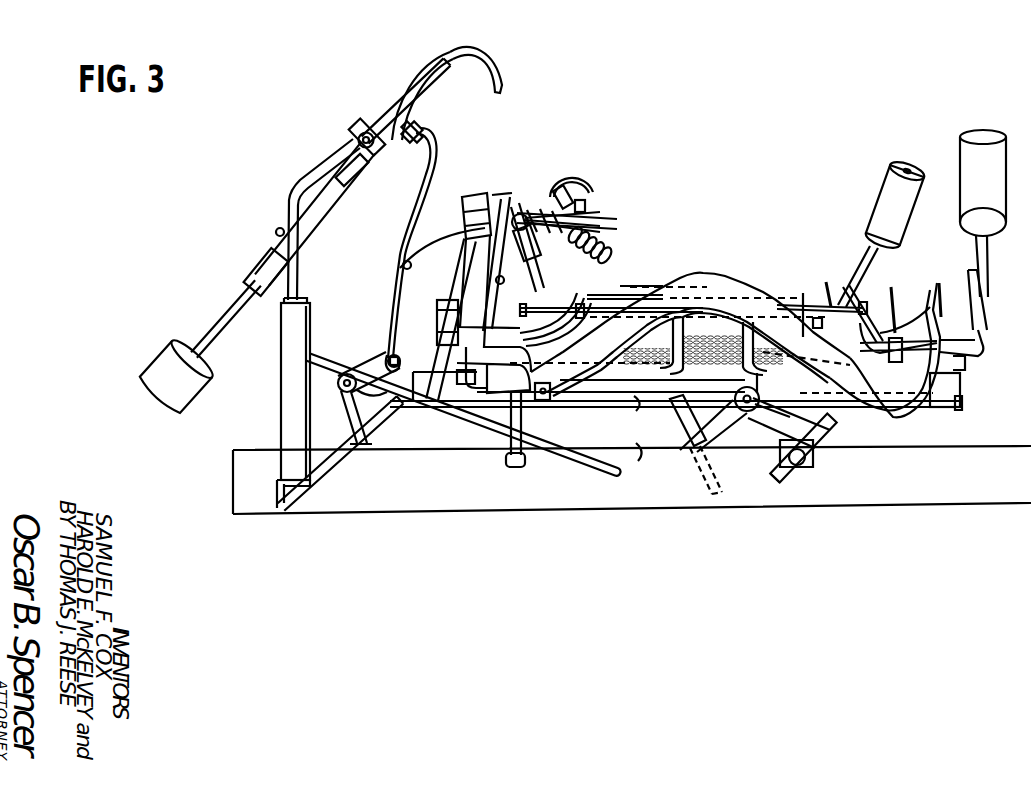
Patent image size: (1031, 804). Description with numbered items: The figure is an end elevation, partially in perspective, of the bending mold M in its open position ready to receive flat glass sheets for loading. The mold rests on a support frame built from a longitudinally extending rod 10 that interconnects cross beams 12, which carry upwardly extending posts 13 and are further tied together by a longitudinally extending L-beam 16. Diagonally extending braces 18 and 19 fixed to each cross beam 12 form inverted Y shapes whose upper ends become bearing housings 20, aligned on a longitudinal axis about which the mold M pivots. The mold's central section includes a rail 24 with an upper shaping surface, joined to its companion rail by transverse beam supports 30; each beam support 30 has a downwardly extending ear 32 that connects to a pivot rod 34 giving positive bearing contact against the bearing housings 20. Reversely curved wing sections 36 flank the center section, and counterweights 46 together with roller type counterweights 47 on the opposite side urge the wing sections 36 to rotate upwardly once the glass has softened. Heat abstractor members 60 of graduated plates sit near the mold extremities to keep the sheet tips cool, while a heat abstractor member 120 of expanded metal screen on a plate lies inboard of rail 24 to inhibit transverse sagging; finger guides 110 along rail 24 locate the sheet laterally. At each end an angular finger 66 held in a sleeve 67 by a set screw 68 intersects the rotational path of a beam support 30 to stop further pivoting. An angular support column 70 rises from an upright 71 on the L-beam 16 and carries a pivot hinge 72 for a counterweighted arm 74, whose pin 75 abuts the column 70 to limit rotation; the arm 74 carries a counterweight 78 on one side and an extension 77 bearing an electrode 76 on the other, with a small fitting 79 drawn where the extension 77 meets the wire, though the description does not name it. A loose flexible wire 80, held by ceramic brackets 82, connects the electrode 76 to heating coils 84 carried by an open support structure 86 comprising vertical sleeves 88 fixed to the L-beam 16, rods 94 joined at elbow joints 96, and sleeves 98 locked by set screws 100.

The longitudinally extending rod 10 is at (690, 430).
The cross beams 12 is at (632, 447).
The upwardly extending posts 13 is at (522, 418).
The longitudinally extending L-beam 16 is at (336, 452).
The diagonally extending brace 18 is at (727, 432).
The diagonally extending brace 19 is at (768, 433).
The bearing housings 20 is at (741, 392).
The rail 24 is at (866, 322).
The beam supports 30 is at (653, 336).
The downwardly extending ear 32 is at (760, 380).
The pivot rod 34 is at (760, 403).
The wing sections 36 is at (803, 310).
The counterweights 46 is at (922, 250).
The roller type counterweights 47 is at (483, 200).
The heat abstractor members 60 is at (610, 295).
The angular finger 66 is at (832, 435).
The sleeve 67 is at (810, 460).
The set screw 68 is at (800, 470).
The angular support column 70 is at (308, 175).
The upright 71 is at (309, 300).
The pivot hinge 72 is at (358, 133).
The counterweighted arm 74 is at (228, 307).
The pin 75 is at (276, 232).
The electrode 76 is at (492, 68).
The extension 77 is at (383, 146).
The counterweight 78 is at (177, 376).
The clamp 79 is at (418, 128).
The flexible wire 80 is at (424, 166).
The ceramic brackets 82 is at (347, 373).
The heating coils 84 is at (612, 245).
The open support structure 86 is at (602, 218).
The vertical sleeves 88 is at (452, 360).
The rods 94 is at (522, 206).
The elbow joints 96 is at (506, 198).
The sleeves 98 is at (588, 208).
The set screws 100 is at (570, 200).
The finger guides 110 is at (828, 280).
The heat abstractor member 120 is at (693, 369).
The bending mold M is at (714, 261).